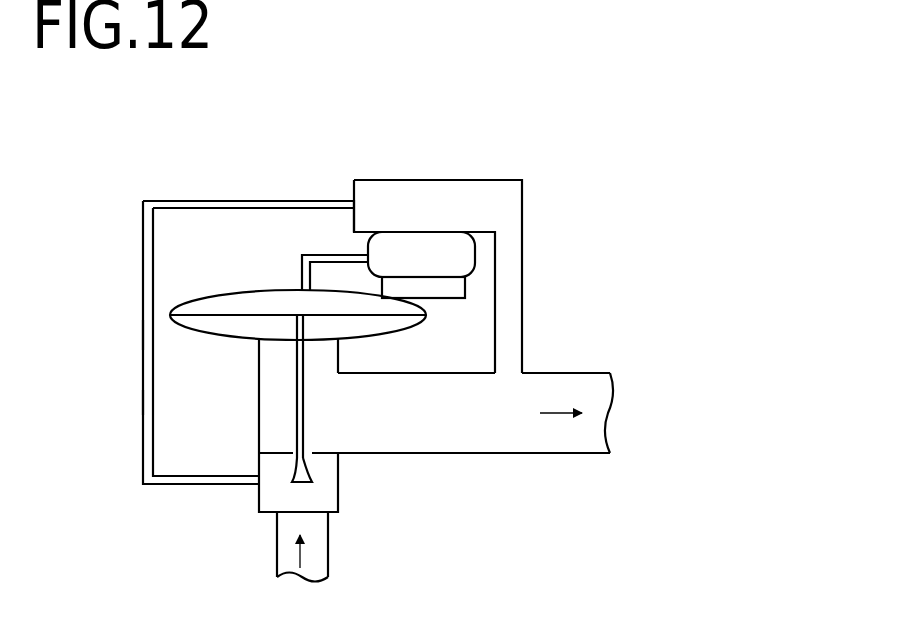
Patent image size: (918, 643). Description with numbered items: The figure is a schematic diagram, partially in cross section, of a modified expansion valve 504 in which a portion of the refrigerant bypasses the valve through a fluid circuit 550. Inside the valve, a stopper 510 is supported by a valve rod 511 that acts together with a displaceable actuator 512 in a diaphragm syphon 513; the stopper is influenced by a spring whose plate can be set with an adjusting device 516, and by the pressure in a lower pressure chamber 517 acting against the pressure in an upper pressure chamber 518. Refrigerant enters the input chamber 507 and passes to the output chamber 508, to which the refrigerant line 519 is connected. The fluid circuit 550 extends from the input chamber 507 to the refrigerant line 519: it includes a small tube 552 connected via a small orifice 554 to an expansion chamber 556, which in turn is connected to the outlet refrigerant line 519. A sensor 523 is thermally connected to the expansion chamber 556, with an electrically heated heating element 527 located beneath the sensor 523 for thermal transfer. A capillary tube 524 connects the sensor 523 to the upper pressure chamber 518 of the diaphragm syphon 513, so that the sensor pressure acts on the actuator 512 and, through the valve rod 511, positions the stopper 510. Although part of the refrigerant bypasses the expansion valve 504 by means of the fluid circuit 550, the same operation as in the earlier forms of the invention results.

The expansion valve 504 is at (253, 197).
The input chamber 507 is at (330, 495).
The output chamber 508 is at (293, 433).
The stopper 510 is at (313, 471).
The valve rod 511 is at (295, 365).
The actuator 512 is at (203, 315).
The diaphragm syphon 513 is at (209, 289).
The adjusting device 516 is at (258, 388).
The lower pressure chamber 517 is at (353, 322).
The upper pressure chamber 518 is at (275, 300).
The refrigerant line 519 is at (547, 373).
The sensor 523 is at (478, 258).
The capillary tube 524 is at (345, 255).
The heating element 527 is at (467, 285).
The fluid circuit 550 is at (141, 402).
The small tube 552 is at (143, 336).
The small orifice 554 is at (351, 197).
The expansion chamber 556 is at (422, 180).